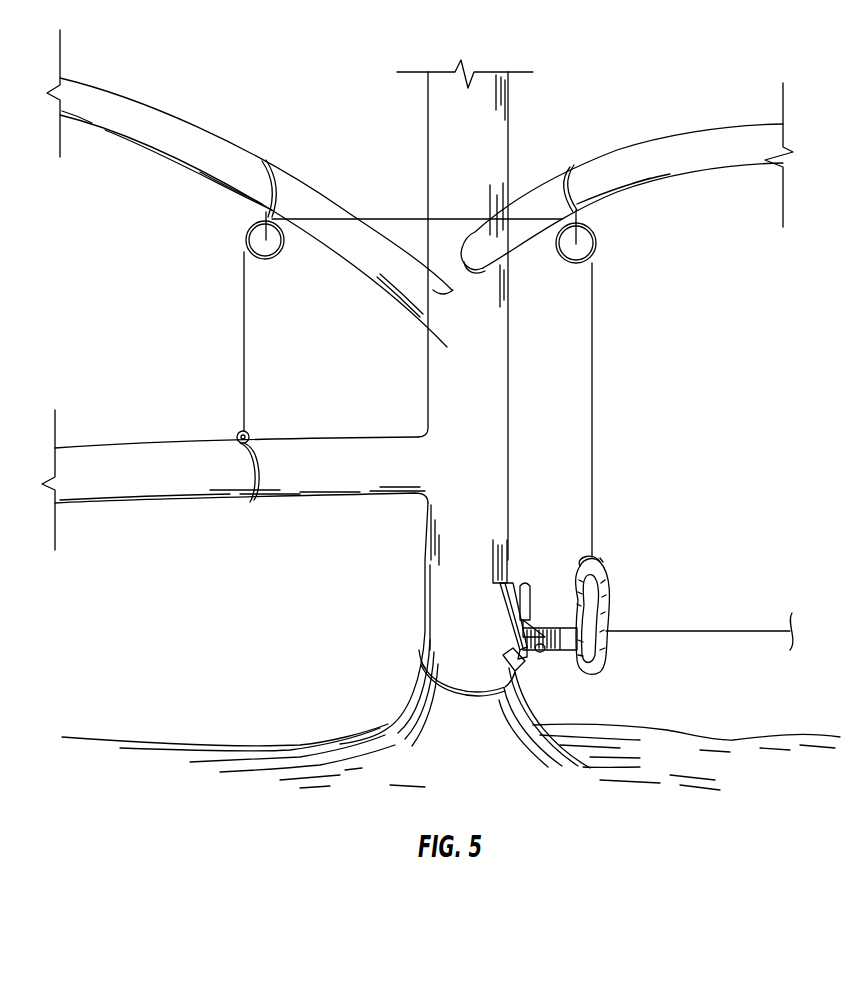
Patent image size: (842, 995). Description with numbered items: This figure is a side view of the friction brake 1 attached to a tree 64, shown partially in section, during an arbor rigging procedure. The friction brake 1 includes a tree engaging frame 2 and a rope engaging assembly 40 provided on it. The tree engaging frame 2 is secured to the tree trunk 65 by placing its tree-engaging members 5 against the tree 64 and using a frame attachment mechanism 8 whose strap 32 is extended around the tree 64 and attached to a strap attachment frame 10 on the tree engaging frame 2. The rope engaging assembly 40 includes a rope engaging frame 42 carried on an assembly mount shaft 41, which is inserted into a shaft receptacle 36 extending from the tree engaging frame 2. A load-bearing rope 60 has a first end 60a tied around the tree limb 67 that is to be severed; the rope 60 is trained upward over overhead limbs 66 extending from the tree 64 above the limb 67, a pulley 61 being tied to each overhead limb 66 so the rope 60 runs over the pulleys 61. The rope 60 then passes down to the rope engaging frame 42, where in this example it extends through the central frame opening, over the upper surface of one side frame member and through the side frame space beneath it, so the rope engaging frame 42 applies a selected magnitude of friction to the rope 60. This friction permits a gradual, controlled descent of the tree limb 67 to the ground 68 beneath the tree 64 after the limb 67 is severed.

The friction brake 1 is at (655, 540).
The tree engaging frame 2 is at (521, 540).
The tree-engaging members 5 is at (507, 638).
The frame attachment mechanism 8 is at (401, 667).
The strap attachment frame 10 is at (493, 656).
The strap 32 is at (467, 690).
The shaft receptacle 36 is at (553, 655).
The rope engaging assembly 40 is at (635, 578).
The assembly mount shaft 41 is at (563, 627).
The rope engaging frame 42 is at (611, 542).
The rope 60 is at (237, 331).
The first end of the rope 60a is at (240, 422).
The pulley 61 is at (267, 258).
The tree 64 is at (422, 137).
The tree trunk 65 is at (437, 622).
The overhead limbs 66 is at (380, 277).
The tree limb 67 is at (347, 453).
The ground 68 is at (303, 740).